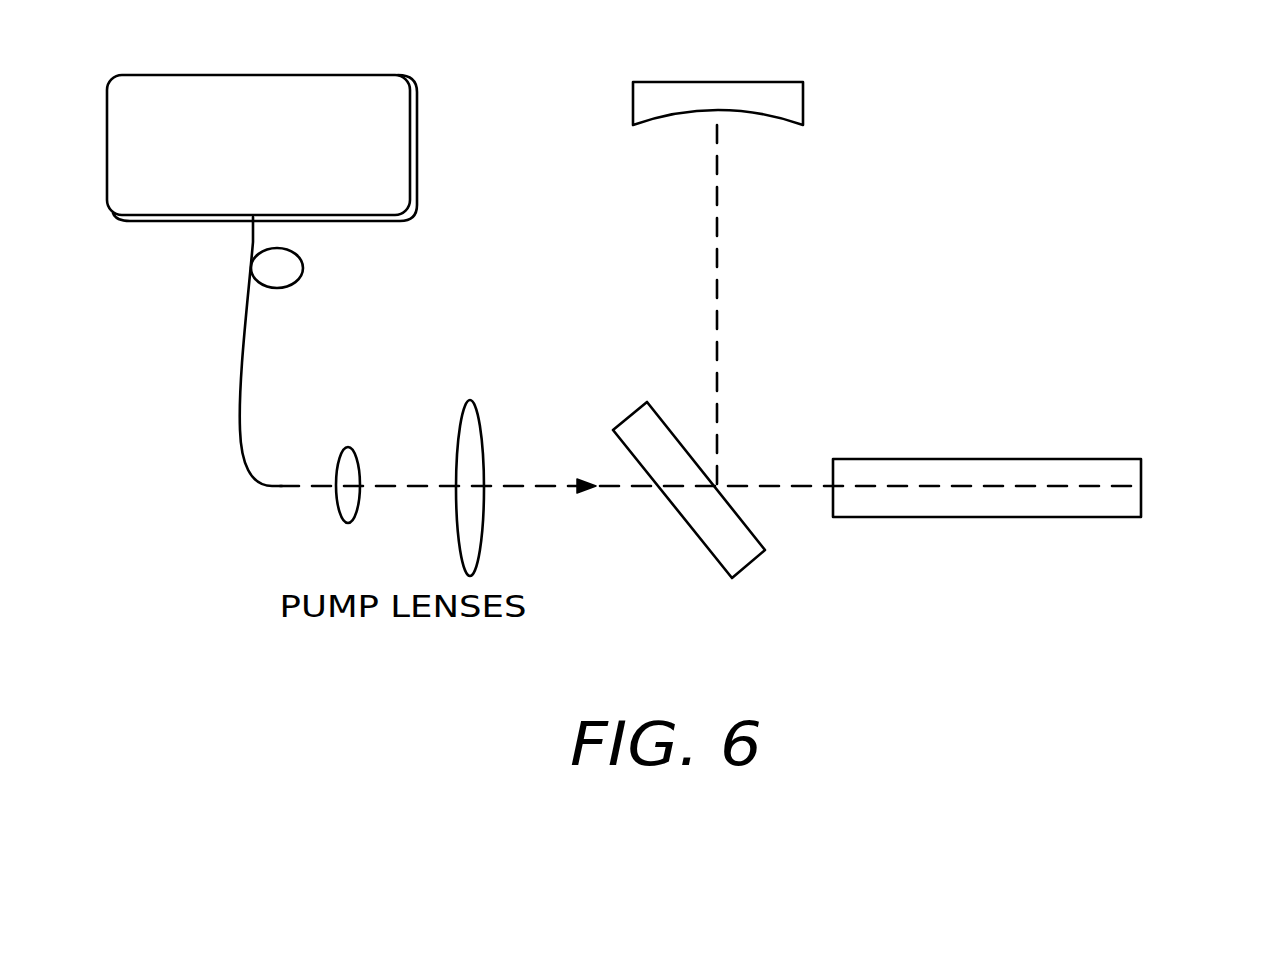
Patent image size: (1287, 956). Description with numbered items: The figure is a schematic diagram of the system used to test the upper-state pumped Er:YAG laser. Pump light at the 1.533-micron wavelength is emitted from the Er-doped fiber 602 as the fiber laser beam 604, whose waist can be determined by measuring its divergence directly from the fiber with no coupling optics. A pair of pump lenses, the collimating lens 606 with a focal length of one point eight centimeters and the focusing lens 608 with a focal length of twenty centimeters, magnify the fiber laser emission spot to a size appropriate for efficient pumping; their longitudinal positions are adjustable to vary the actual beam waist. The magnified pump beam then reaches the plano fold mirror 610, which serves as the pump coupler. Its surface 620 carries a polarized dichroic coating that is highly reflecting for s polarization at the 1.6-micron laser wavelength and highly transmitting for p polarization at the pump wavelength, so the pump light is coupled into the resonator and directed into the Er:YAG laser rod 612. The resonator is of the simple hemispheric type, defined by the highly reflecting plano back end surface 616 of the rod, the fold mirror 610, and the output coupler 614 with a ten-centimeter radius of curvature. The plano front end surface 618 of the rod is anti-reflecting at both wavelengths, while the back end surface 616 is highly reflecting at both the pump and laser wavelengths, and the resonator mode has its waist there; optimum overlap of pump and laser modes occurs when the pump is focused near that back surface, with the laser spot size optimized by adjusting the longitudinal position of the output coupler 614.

The fiber 602 is at (424, 150).
The fiber laser beam 604 is at (245, 325).
The collimating lens 606 is at (350, 447).
The focusing lens 608 is at (471, 400).
The fold mirror 610 is at (748, 566).
The laser rod 612 is at (979, 458).
The output coupler 614 is at (734, 82).
The plano back end surface 616 is at (1142, 506).
The plano front end surface 618 is at (834, 502).
The surface 620 is at (665, 414).